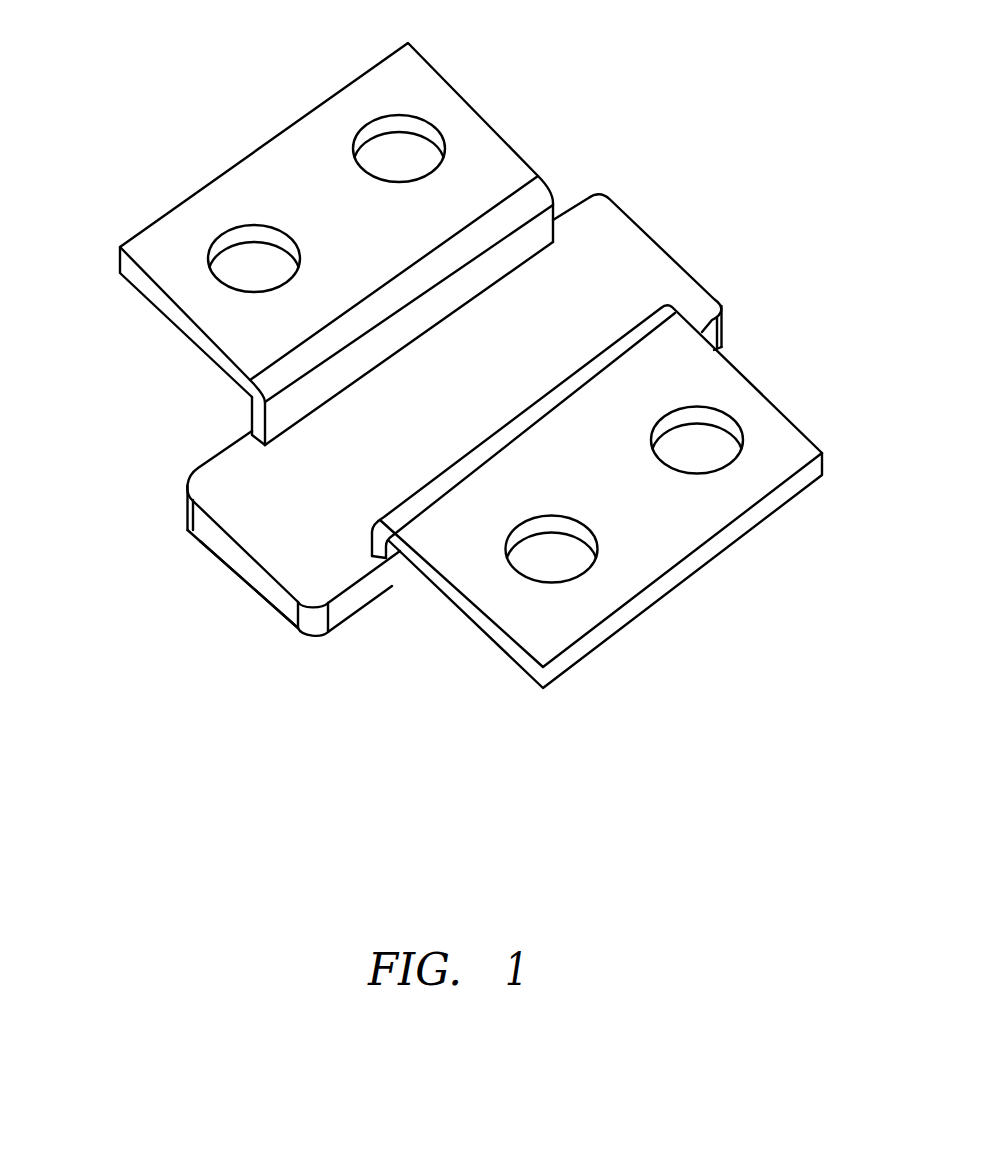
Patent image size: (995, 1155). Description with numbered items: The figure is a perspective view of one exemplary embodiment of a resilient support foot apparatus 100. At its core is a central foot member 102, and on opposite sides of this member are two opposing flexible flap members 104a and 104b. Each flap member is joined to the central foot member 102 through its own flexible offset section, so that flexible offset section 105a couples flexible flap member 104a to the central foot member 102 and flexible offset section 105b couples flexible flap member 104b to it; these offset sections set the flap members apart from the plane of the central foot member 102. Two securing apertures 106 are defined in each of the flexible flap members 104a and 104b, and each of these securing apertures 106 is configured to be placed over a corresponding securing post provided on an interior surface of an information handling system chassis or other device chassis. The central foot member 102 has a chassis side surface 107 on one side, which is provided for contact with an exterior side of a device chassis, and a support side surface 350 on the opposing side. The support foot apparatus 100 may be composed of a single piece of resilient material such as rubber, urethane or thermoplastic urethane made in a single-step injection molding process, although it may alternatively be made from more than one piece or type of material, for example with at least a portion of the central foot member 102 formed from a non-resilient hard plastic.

The resilient support foot apparatus 100 is at (795, 185).
The central foot member 102 is at (431, 424).
The flexible flap member 104a is at (300, 244).
The flexible flap member 104b is at (594, 501).
The flexible offset section 105a is at (250, 423).
The flexible offset section 105b is at (373, 557).
The securing apertures 106 is at (243, 257).
The chassis side surface 107 is at (617, 227).
The support side surface 350 is at (263, 600).